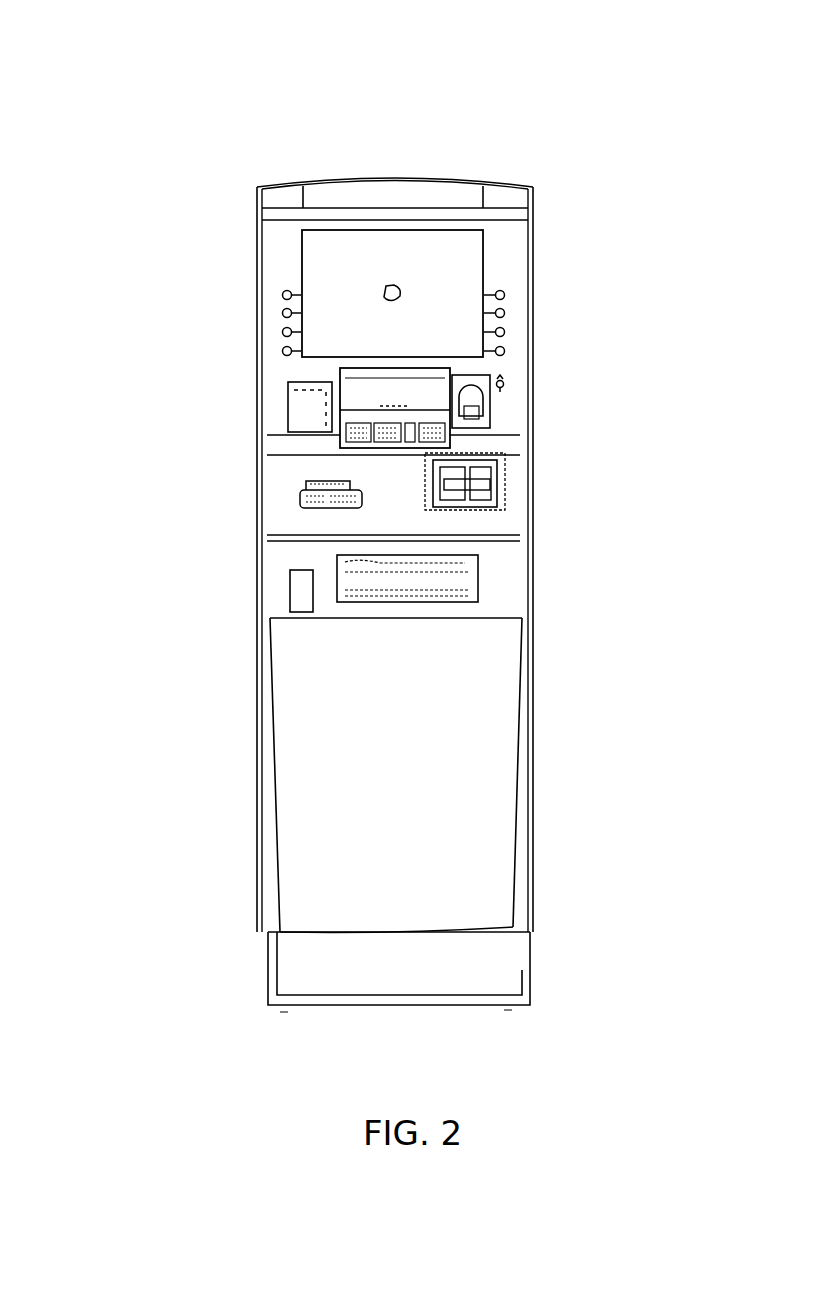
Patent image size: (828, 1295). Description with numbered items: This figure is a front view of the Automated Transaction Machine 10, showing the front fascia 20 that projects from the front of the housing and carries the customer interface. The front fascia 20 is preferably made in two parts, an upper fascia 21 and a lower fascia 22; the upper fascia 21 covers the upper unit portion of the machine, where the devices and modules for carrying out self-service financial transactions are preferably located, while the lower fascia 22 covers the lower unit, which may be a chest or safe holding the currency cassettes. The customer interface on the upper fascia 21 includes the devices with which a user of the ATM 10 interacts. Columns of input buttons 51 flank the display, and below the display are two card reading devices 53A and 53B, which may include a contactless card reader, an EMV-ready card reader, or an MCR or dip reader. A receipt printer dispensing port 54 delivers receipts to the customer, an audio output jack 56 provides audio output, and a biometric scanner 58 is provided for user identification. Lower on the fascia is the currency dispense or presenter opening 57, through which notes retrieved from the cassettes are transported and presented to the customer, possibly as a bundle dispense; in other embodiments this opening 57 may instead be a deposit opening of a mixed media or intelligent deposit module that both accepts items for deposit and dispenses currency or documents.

The Automated Transaction Machine 10 is at (394, 86).
The front fascia 20 is at (212, 600).
The upper fascia 21 is at (516, 246).
The lower fascia 22 is at (295, 757).
The input buttons 51 is at (285, 293).
The card reading device 53A is at (502, 487).
The card reading device 53B is at (288, 414).
The receipt printer dispensing port 54 is at (300, 497).
The audio output jack 56 is at (504, 381).
The currency dispense or presenter opening 57 is at (477, 580).
The biometric scanner 58 is at (490, 406).